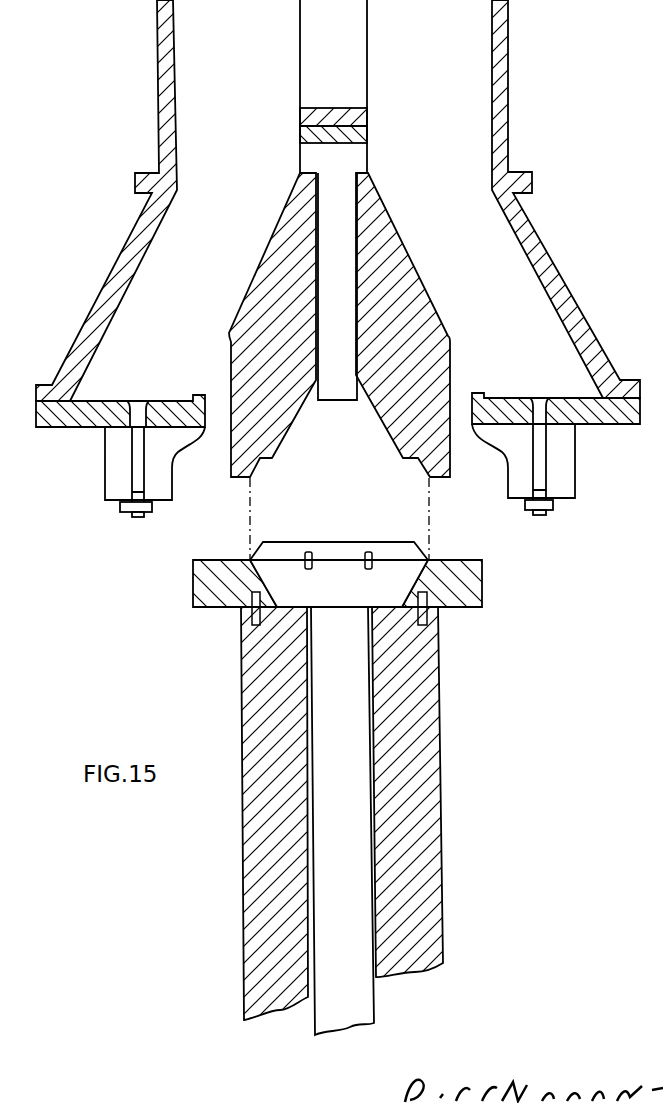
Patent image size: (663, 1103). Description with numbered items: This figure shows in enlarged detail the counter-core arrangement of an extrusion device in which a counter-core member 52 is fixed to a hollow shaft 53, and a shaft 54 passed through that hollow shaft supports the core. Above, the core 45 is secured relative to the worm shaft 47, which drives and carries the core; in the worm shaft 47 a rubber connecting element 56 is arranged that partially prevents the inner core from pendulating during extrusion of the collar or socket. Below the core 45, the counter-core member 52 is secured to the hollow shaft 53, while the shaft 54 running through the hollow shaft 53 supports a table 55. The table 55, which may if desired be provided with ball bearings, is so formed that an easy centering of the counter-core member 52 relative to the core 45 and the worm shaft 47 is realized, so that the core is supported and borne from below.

The worm shaft 47 is at (345, 53).
The rubber connecting element 56 is at (362, 118).
The core 45 is at (425, 307).
The table 55 is at (407, 551).
The counter-core member 52 is at (463, 582).
The hollow shaft 53 is at (415, 723).
The shaft 54 is at (342, 782).